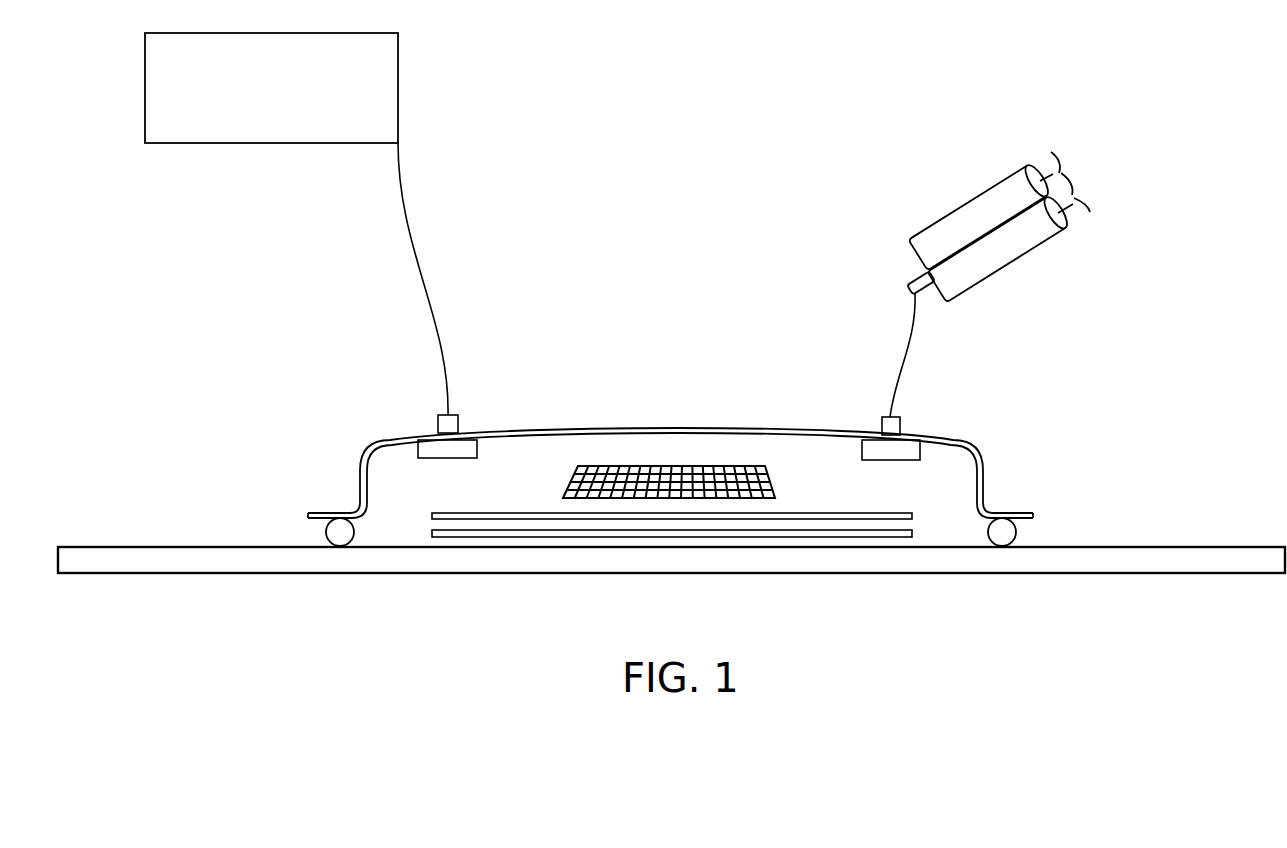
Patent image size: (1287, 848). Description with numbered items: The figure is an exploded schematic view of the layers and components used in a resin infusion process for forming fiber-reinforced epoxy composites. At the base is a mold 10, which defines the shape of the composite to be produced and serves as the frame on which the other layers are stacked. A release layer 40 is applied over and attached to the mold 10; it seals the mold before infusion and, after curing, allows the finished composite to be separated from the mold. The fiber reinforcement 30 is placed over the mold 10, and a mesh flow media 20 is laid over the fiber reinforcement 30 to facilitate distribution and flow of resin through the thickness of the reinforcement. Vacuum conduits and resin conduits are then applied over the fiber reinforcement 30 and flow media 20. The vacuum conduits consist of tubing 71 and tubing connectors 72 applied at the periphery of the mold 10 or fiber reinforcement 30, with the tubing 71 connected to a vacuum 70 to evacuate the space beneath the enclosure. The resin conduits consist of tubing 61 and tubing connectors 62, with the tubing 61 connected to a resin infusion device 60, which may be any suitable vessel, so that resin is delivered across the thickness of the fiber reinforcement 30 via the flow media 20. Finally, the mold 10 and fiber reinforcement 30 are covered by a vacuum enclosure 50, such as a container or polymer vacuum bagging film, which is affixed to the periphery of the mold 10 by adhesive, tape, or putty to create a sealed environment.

The mold 10 is at (1190, 547).
The mesh flow media 20 is at (770, 480).
The fiber reinforcement 30 is at (540, 513).
The release layer 40 is at (432, 534).
The vacuum enclosure 50 is at (985, 466).
The resin infusion device 60 is at (982, 190).
The tubing 61 is at (911, 323).
The tubing connectors 62 is at (882, 424).
The vacuum 70 is at (271, 88).
The tubing 71 is at (437, 322).
The tubing connectors 72 is at (462, 416).